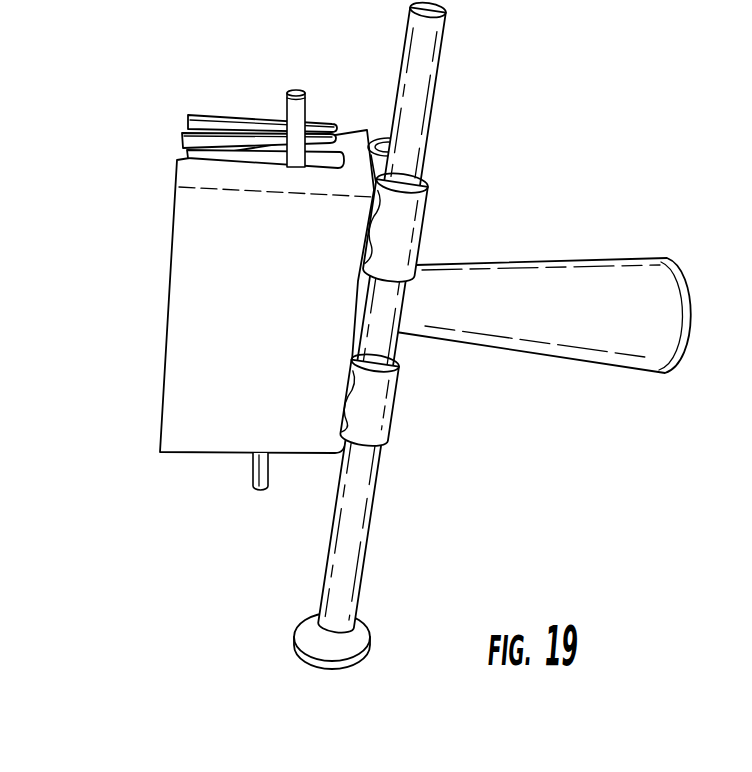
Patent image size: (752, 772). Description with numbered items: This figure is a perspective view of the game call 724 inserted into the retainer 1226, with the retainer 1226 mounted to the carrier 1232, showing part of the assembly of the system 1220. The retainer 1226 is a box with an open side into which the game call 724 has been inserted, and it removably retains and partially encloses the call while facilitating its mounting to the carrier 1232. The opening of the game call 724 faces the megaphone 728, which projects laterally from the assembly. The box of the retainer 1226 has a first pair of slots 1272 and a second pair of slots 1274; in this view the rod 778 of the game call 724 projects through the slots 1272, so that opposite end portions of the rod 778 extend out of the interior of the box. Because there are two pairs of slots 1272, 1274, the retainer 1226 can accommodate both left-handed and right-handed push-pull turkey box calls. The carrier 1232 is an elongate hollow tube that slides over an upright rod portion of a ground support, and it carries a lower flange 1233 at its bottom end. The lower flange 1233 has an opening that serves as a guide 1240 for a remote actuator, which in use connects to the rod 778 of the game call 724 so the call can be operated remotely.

The system 1220 is at (100, 157).
The retainer 1226 is at (165, 365).
The first pair of slots 1272 is at (215, 158).
The second pair of slots 1274 is at (225, 116).
The carrier 1232 is at (427, 98).
The lower flange 1233 is at (372, 640).
The guide 1240 is at (337, 642).
The megaphone 728 is at (593, 270).
The game call 724 is at (245, 462).
The rod 778 is at (257, 490).